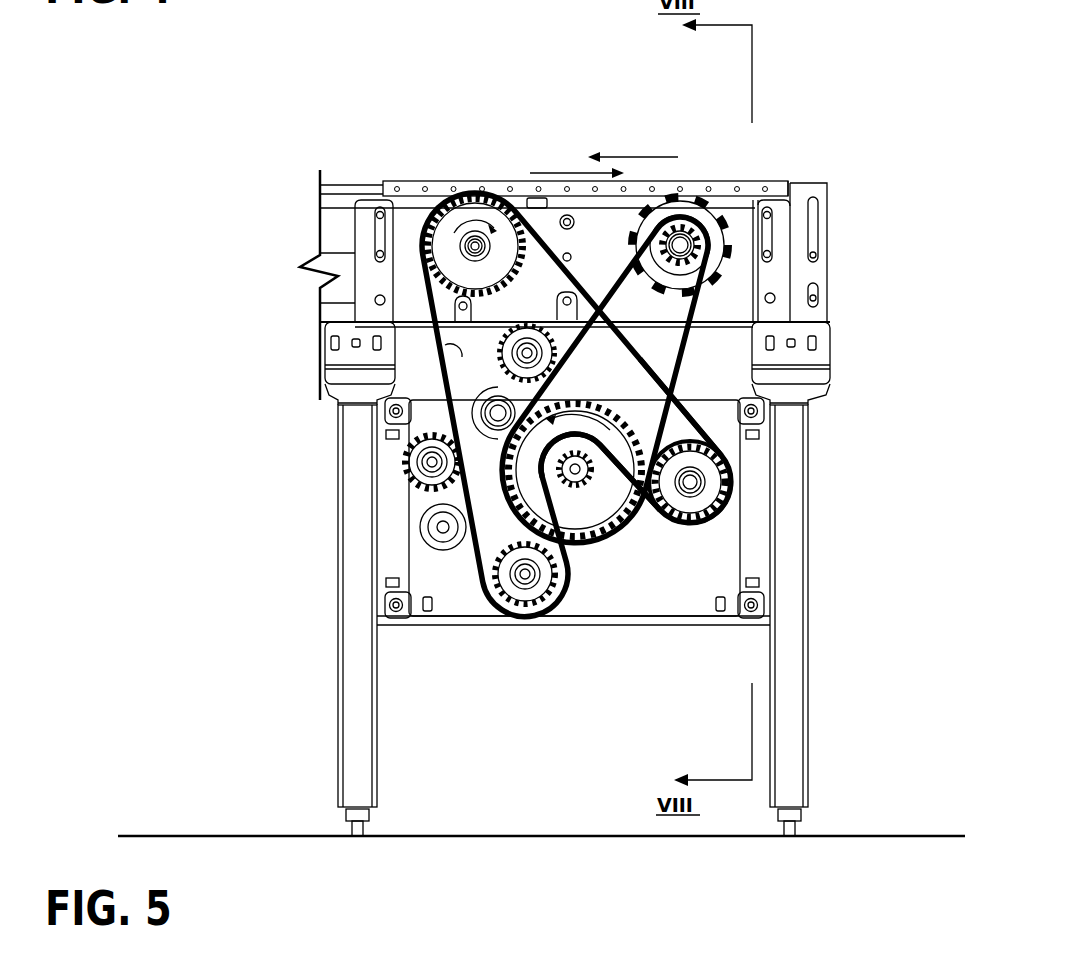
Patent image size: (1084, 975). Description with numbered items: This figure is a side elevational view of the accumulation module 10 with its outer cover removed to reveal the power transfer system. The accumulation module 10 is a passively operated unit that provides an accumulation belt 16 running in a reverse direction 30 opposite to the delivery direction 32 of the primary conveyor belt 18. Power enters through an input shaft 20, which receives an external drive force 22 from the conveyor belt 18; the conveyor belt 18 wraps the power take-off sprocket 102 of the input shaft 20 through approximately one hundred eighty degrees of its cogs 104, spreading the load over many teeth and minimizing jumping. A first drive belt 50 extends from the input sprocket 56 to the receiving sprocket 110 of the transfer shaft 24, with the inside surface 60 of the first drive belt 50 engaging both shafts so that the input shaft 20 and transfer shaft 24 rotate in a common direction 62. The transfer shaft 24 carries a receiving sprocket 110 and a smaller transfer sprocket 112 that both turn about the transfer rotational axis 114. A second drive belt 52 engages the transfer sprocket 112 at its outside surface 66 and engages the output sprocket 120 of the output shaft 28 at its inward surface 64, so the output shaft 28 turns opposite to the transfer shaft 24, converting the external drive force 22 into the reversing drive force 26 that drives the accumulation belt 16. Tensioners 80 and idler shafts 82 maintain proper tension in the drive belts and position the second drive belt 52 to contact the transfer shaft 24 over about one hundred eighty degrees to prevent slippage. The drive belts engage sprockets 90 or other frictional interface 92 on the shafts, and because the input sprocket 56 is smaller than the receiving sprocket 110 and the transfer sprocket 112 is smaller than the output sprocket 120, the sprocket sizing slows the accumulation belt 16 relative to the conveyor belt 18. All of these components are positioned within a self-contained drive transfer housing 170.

The accumulation module 10 is at (414, 120).
The accumulation belt 16 is at (320, 183).
The conveyor belt 18 is at (740, 292).
The input shaft 20 is at (740, 230).
The external drive force 22 is at (683, 218).
The transfer shaft 24 is at (607, 470).
The reversing drive force 26 is at (476, 212).
The output shaft 28 is at (472, 246).
The reverse direction 30 is at (562, 173).
The delivery direction 32 is at (637, 157).
The first drive belt 50 is at (740, 356).
The second drive belt 52 is at (485, 570).
The input sprocket 56 is at (740, 260).
The inside surface 60 is at (740, 313).
The common direction 62 is at (740, 404).
The inward surface 64 is at (440, 344).
The outside surface 66 is at (572, 560).
The tensioner 80 is at (404, 497).
The idler shaft 82 is at (706, 488).
The sprocket 90 is at (523, 618).
The frictional interface 92 is at (645, 553).
The power take-off sprocket 102 is at (658, 234).
The cogs 104 is at (618, 338).
The receiving sprocket 110 is at (725, 442).
The transfer sprocket 112 is at (580, 488).
The transfer rotational axis 114 is at (484, 411).
The output sprocket 120 is at (471, 197).
The drive transfer housing 170 is at (823, 548).